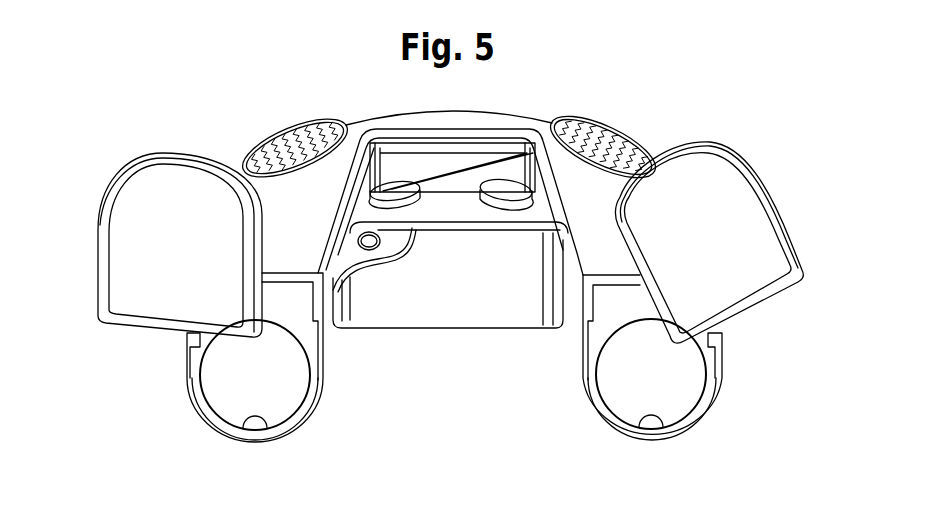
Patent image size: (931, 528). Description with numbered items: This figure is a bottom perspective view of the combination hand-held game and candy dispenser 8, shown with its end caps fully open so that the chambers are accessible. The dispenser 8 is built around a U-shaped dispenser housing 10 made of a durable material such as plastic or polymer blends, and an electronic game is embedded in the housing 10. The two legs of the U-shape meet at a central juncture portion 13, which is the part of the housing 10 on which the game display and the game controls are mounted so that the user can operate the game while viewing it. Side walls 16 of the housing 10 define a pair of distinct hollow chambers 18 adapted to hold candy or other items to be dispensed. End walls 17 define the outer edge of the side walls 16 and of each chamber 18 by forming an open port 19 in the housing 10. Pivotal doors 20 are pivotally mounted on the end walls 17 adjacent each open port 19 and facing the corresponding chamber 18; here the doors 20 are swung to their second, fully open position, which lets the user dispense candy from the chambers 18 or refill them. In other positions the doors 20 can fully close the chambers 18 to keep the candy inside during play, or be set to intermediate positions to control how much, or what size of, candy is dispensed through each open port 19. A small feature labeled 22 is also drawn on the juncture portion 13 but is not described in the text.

The combination hand-held game and candy dispenser 8 is at (368, 117).
The dispenser housing 10 is at (609, 70).
The central juncture portion 13 is at (465, 308).
The side walls 16 is at (241, 168).
The end walls 17 is at (330, 380).
The hollow chambers 18 is at (229, 373).
The open port 19 is at (240, 423).
The pivotal doors 20 is at (98, 248).
The button 22 is at (378, 249).